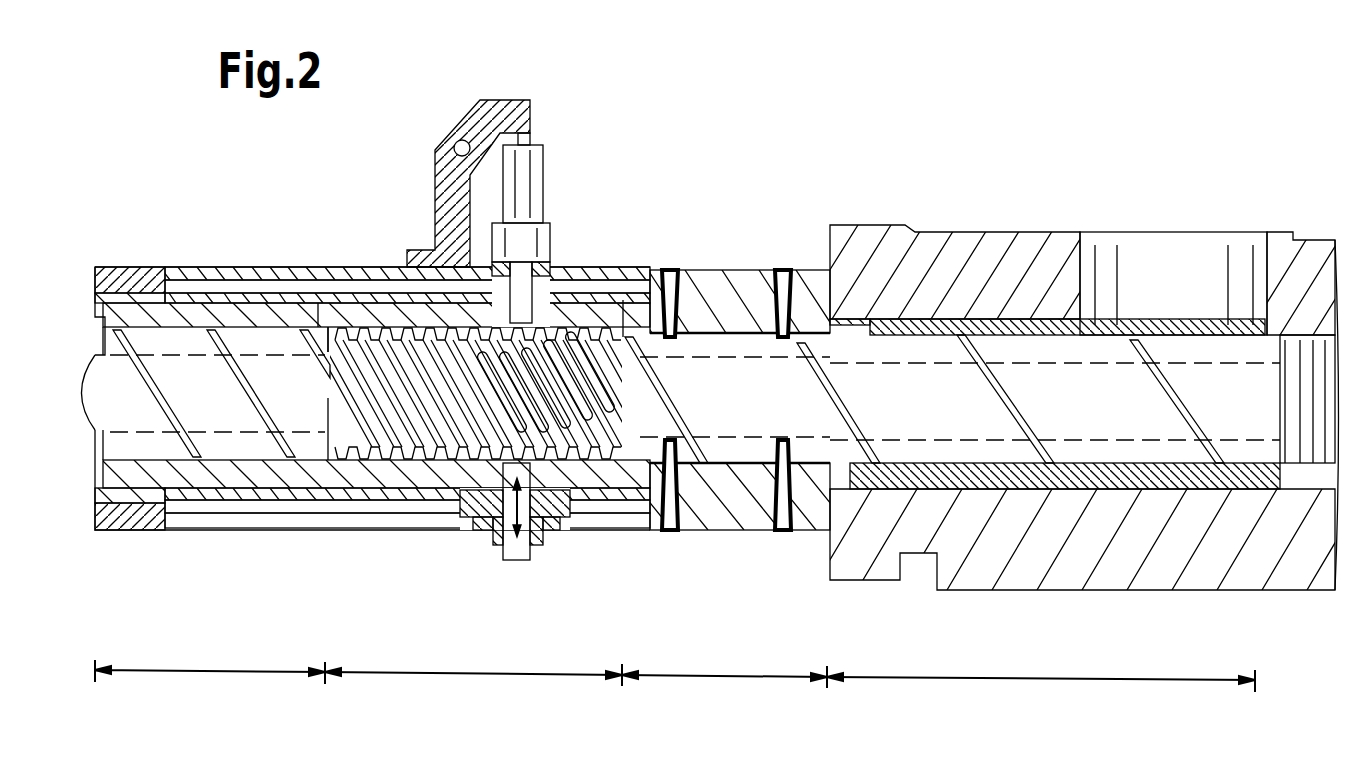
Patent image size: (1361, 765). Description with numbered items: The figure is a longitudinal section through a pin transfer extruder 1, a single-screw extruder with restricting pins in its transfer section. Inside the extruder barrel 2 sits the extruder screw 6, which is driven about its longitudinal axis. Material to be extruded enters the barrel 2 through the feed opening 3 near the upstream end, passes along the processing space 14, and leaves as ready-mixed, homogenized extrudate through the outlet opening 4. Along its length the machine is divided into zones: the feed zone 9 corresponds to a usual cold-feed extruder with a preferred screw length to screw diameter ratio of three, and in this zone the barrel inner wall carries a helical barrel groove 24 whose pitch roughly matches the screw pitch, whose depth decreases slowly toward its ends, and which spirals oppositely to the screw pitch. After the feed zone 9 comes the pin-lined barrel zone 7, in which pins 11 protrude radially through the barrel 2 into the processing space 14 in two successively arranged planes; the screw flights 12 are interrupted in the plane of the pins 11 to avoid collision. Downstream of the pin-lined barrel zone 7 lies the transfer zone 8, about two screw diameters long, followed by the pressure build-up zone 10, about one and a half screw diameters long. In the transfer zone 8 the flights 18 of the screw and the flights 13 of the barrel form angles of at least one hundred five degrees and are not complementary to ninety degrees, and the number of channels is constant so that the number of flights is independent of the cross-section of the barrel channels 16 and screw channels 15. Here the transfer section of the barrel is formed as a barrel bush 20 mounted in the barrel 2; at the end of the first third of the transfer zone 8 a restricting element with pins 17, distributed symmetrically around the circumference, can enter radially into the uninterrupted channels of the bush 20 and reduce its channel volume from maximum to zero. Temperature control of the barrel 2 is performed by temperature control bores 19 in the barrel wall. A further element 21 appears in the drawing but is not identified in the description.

The pin transfer extruder 1 is at (1080, 351).
The extruder barrel 2 is at (980, 265).
The feed opening 3 is at (1158, 301).
The outlet opening 4 is at (95, 333).
The extruder screw 6 is at (1078, 411).
The pin-lined barrel zone 7 is at (724, 687).
The transfer zone 8 is at (473, 686).
The feed zone 9 is at (1041, 693).
The pressure build-up zone 10 is at (210, 684).
The pins 11 is at (668, 268).
The screw flights 12 is at (688, 480).
The barrel flights 13 is at (405, 322).
The processing space 14 is at (726, 318).
The screw channels 15 is at (388, 389).
The barrel channels 16 is at (540, 537).
The restricting pins 17 is at (542, 248).
The screw flights of transfer zone 18 is at (318, 328).
The temperature control bores 19 is at (194, 503).
The barrel bush 20 is at (345, 487).
The cylinder 21 is at (523, 172).
The barrel groove 24 is at (1064, 322).